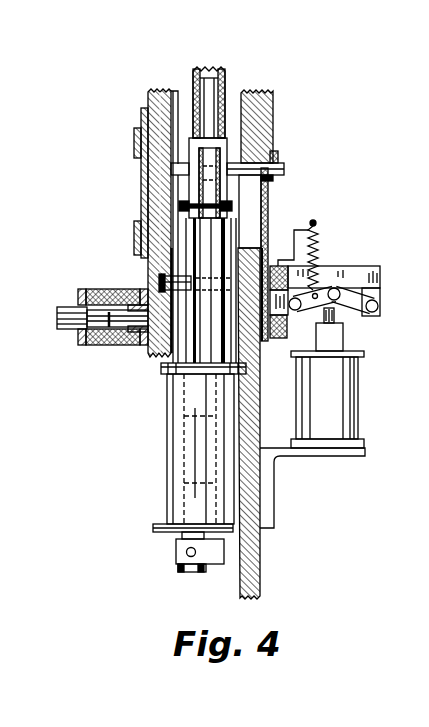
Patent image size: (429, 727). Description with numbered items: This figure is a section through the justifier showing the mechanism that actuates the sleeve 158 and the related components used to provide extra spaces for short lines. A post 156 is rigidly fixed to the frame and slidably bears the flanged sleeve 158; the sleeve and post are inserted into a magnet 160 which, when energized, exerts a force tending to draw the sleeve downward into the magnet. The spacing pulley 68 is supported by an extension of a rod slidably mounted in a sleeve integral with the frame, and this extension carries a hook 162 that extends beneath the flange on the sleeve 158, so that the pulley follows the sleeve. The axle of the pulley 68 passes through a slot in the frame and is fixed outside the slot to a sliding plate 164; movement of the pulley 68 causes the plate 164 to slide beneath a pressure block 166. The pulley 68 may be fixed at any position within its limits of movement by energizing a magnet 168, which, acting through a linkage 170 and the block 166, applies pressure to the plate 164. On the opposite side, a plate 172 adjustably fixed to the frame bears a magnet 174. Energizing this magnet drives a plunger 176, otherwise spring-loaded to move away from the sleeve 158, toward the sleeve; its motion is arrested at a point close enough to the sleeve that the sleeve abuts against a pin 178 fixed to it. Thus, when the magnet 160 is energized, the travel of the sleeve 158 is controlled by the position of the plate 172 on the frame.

The spacing pulley 68 is at (221, 148).
The plate 172 is at (140, 167).
The flanged sleeve 158 is at (195, 243).
The hook 162 is at (259, 183).
The sliding plate 164 is at (260, 202).
The linkage 170 is at (336, 296).
The pin 178 is at (155, 274).
The plunger 176 is at (106, 337).
The magnet 174 is at (122, 338).
The pressure block 166 is at (270, 330).
The magnet 168 is at (345, 386).
The magnet 160 is at (172, 489).
The post 156 is at (170, 562).